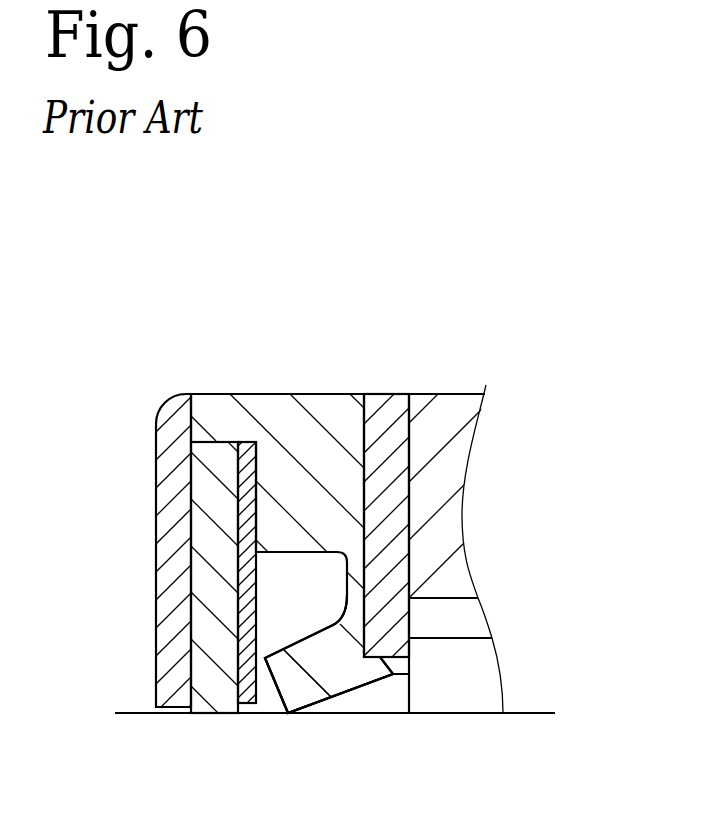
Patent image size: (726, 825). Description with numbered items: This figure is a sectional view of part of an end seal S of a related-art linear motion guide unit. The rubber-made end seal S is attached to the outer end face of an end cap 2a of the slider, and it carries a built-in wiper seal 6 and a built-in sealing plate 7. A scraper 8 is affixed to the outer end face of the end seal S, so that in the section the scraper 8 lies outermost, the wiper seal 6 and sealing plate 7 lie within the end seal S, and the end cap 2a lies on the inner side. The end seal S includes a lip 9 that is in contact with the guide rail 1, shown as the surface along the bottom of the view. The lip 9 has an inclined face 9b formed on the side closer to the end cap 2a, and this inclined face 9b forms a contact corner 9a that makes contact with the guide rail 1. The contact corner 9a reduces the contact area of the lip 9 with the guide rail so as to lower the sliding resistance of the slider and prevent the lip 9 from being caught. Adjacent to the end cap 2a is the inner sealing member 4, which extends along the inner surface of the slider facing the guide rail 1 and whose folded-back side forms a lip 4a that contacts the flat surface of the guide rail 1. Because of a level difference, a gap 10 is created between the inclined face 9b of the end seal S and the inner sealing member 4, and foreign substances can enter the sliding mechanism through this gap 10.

The guide rail 1 is at (531, 713).
The end cap 2a is at (450, 405).
The inner sealing member 4 is at (472, 617).
The lip 4a is at (463, 707).
The wiper seal 6 is at (203, 582).
The sealing plate 7 is at (252, 442).
The scraper 8 is at (170, 480).
The lip 9 is at (328, 665).
The contact corner 9a is at (285, 695).
The inclined face 9b is at (363, 688).
The gap 10 is at (385, 700).
The end seal S is at (323, 401).